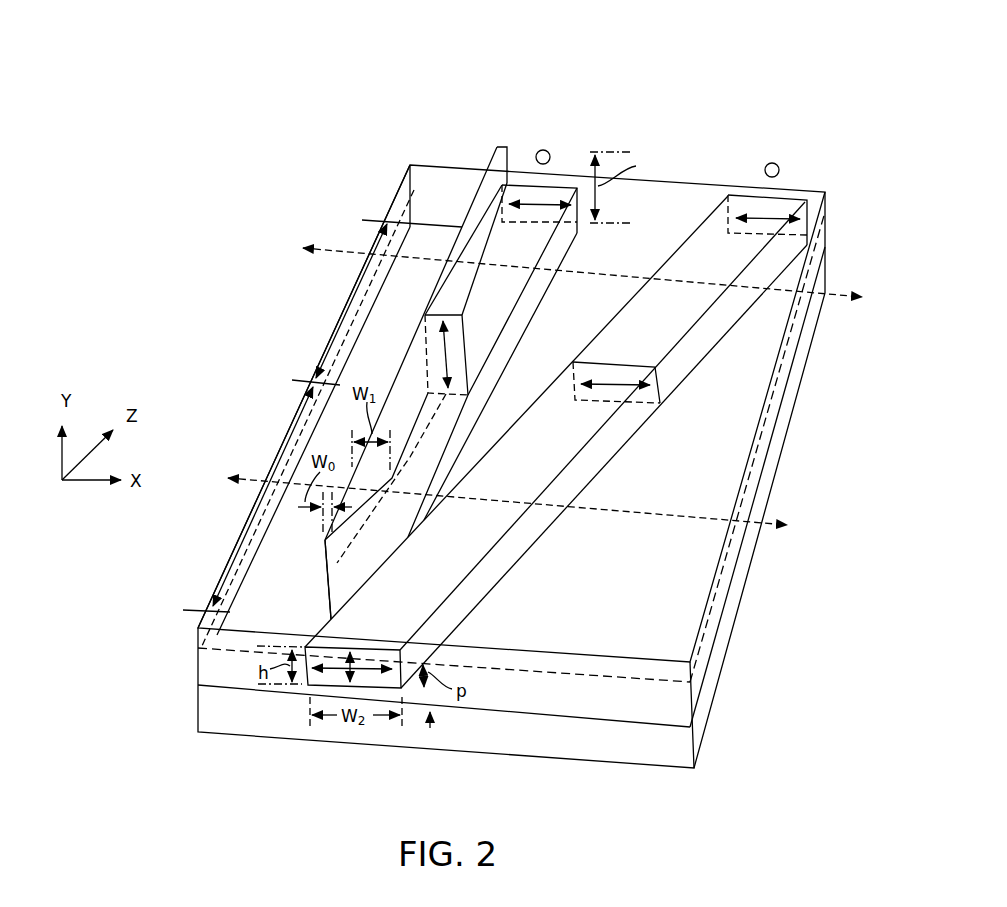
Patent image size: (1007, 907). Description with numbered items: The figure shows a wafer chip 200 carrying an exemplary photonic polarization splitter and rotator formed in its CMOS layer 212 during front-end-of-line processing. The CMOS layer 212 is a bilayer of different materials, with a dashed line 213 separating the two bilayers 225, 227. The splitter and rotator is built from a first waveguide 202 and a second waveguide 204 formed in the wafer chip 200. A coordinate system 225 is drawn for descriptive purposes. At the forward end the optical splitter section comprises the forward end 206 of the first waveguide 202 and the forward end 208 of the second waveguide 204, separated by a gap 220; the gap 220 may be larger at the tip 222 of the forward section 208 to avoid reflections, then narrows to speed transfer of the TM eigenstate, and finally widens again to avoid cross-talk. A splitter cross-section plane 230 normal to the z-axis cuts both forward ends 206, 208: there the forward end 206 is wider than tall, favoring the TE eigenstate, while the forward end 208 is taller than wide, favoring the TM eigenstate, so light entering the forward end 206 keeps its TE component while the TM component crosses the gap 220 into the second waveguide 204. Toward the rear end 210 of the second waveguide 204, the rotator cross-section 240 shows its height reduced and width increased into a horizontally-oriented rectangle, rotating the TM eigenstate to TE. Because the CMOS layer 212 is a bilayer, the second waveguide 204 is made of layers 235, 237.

The wafer chip 200 is at (438, 74).
The first waveguide 202 is at (637, 347).
The second waveguide 204 is at (398, 377).
The forward end of first waveguide 206 is at (520, 597).
The forward end of second waveguide 208 is at (325, 573).
The rear end of second waveguide 210 is at (545, 176).
The CMOS layer 212 is at (758, 440).
The dashed line 213 is at (580, 668).
The gap 220 is at (310, 602).
The tip of forward section 222 is at (302, 542).
The coordinate system / bilayer 225 is at (673, 690).
The bilayer 227 is at (675, 664).
The splitter cross-section plane 230 is at (770, 528).
The layer of second waveguide 235 is at (408, 497).
The layer of second waveguide 237 is at (423, 408).
The rotator cross-section 240 is at (847, 305).